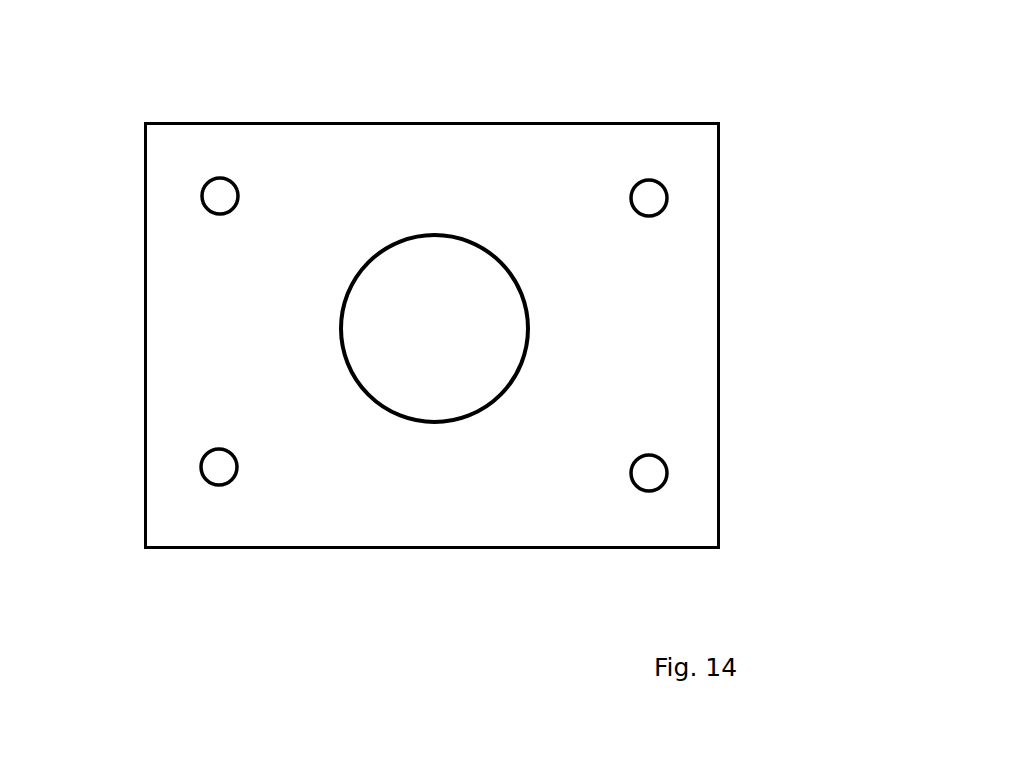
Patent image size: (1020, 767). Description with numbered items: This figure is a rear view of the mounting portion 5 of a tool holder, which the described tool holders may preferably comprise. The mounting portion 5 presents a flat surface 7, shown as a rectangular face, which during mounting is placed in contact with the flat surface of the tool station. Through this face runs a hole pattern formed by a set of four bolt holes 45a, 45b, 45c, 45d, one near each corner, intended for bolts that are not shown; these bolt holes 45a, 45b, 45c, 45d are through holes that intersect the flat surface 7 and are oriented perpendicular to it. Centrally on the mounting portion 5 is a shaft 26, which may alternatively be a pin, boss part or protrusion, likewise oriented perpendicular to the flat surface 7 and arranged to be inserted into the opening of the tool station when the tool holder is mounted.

The mounting portion 5 is at (150, 85).
The flat surface 7 is at (413, 167).
The shaft 26 is at (493, 351).
The bolt hole 45a is at (218, 199).
The bolt hole 45b is at (218, 473).
The bolt hole 45c is at (652, 197).
The bolt hole 45d is at (652, 473).